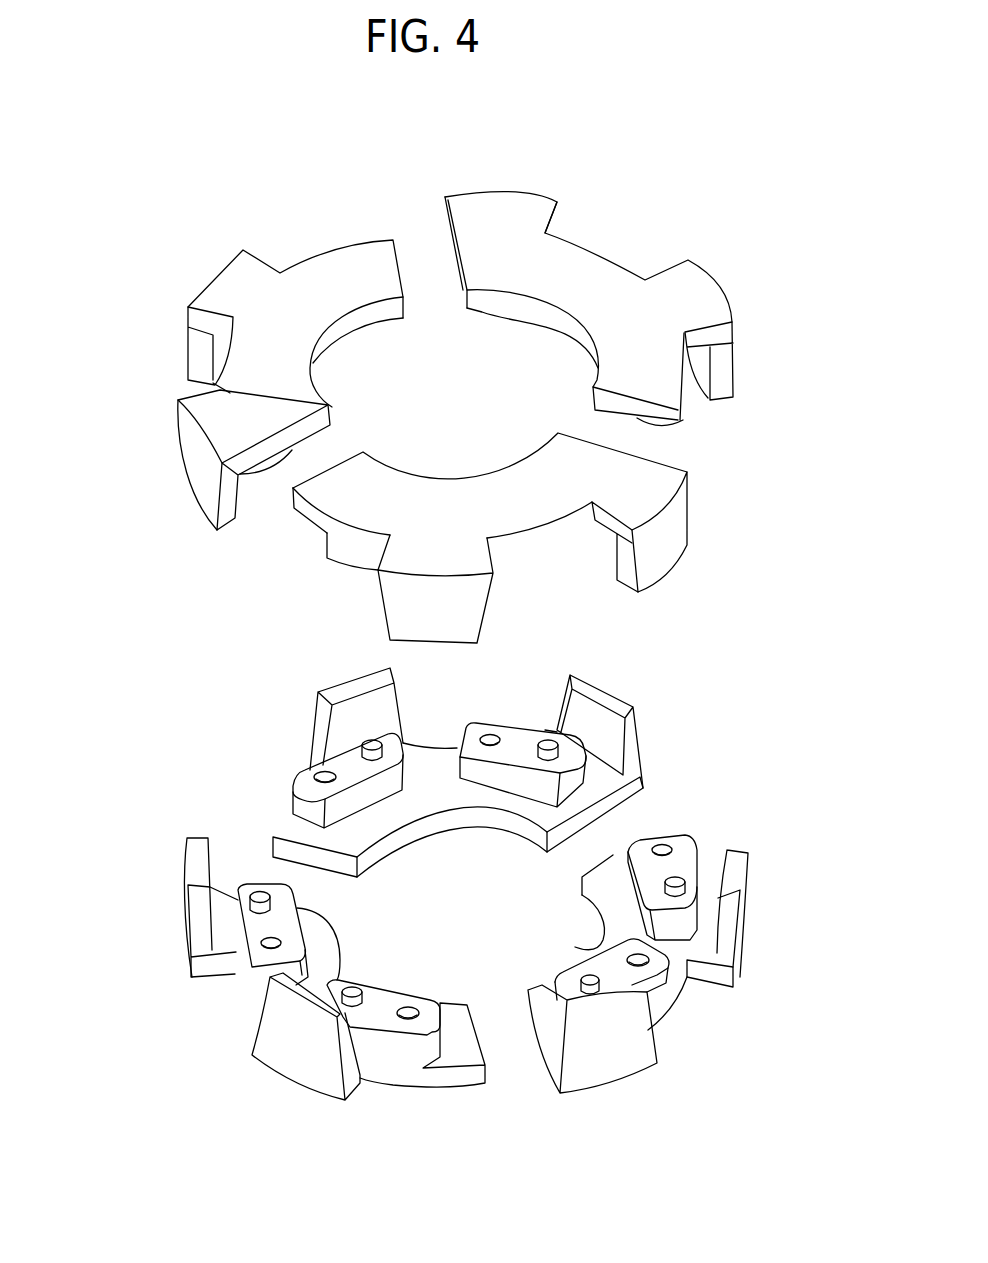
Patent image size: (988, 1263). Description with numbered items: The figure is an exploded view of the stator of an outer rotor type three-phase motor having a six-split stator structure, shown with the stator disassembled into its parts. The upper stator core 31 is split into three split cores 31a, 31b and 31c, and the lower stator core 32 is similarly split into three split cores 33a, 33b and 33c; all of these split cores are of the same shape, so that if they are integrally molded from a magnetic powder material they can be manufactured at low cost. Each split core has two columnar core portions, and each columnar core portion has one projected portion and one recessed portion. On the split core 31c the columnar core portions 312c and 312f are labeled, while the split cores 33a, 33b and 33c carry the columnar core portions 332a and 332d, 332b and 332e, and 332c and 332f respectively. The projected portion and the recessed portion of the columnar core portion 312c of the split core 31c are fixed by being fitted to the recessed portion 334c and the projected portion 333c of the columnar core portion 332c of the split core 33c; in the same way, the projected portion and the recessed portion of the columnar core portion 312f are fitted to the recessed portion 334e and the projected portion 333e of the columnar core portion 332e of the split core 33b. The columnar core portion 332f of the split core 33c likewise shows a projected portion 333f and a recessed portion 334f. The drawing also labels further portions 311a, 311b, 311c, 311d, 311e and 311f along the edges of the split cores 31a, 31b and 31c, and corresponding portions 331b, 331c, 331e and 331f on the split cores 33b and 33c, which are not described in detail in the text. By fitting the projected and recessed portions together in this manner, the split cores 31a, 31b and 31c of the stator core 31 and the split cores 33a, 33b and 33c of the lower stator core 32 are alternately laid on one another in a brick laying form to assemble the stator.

The stator core 31 is at (68, 212).
The split core 31a is at (330, 250).
The split core 31b is at (576, 265).
The split core 31c is at (347, 504).
The tab 311a is at (180, 467).
The tab 311b is at (528, 198).
The tab 311c is at (670, 530).
The tab 311d is at (230, 287).
The tab 311e is at (723, 372).
The tab 311f is at (467, 620).
The columnar core portion 312c is at (562, 553).
The columnar core portion 312f is at (353, 555).
The lower ring assembly 32 is at (68, 1115).
The split core 33a is at (290, 832).
The split core 33b is at (463, 1070).
The split core 33c is at (628, 927).
The standing tab 331b is at (188, 930).
The standing tab 331c is at (622, 1058).
The standing tab 331e is at (287, 1057).
The standing tab 331f is at (743, 930).
The boss 332a is at (517, 737).
The boss 332b is at (242, 977).
The columnar core portion 332c is at (658, 982).
The boss 332d is at (308, 786).
The columnar core portion 332e is at (383, 1038).
The boss 332f is at (677, 880).
The projected portion 333c is at (588, 978).
The projected portion 333e is at (353, 990).
The pin 333f is at (700, 853).
The recessed portion 334c is at (633, 960).
The recessed portion 334e is at (408, 1010).
The hole 334f is at (662, 845).